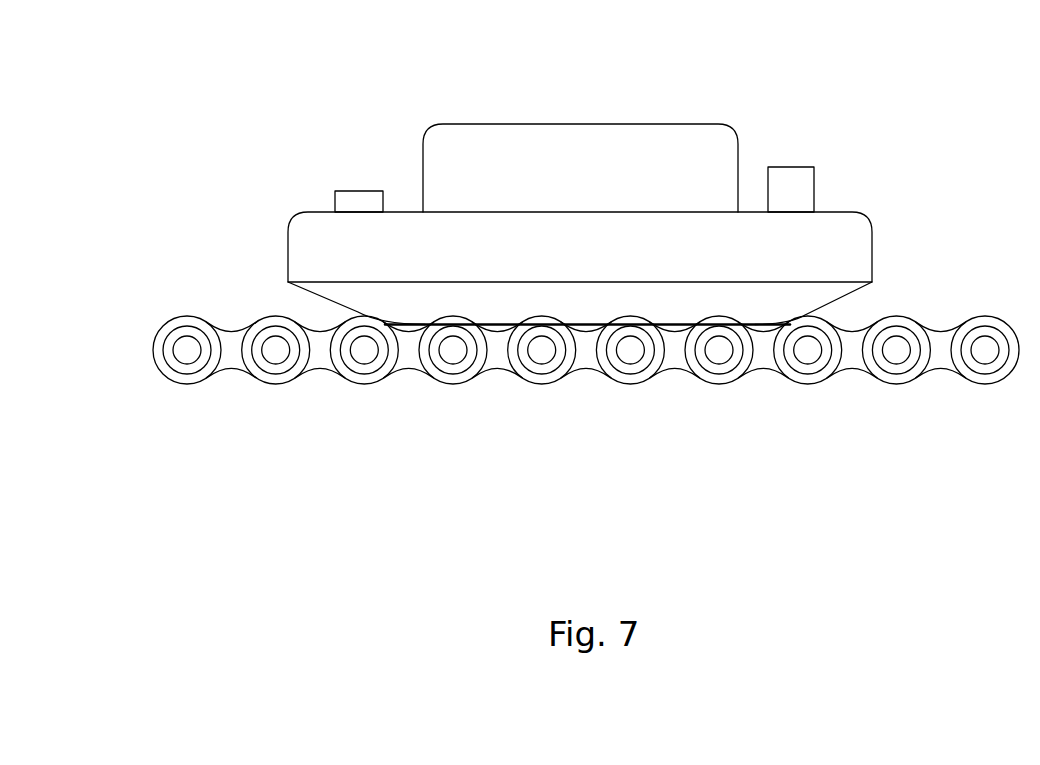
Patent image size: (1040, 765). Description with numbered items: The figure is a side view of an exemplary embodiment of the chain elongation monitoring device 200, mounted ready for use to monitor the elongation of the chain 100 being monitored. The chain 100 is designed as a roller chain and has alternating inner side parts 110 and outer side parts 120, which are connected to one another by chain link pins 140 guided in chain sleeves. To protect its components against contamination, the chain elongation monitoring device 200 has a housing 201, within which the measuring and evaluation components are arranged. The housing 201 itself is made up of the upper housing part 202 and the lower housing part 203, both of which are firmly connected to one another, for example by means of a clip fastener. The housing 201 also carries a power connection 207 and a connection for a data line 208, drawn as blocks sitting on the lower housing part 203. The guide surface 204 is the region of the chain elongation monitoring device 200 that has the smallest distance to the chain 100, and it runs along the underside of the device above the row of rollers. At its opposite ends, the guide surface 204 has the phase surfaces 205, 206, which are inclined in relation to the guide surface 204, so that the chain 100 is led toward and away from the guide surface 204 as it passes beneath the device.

The chain 100 is at (853, 405).
The inner side part 110 is at (675, 365).
The outer side part 120 is at (407, 363).
The chain link pin 140 is at (630, 350).
The chain elongation monitoring device 200 is at (593, 183).
The housing 201 is at (883, 233).
The upper housing part 202 is at (580, 168).
The lower housing part 203 is at (580, 247).
The guide surface 204 is at (587, 309).
The phase surface 205 is at (334, 330).
The phase surface 206 is at (342, 202).
The power connection 207 is at (808, 192).
The connection for a data line 208 is at (833, 305).